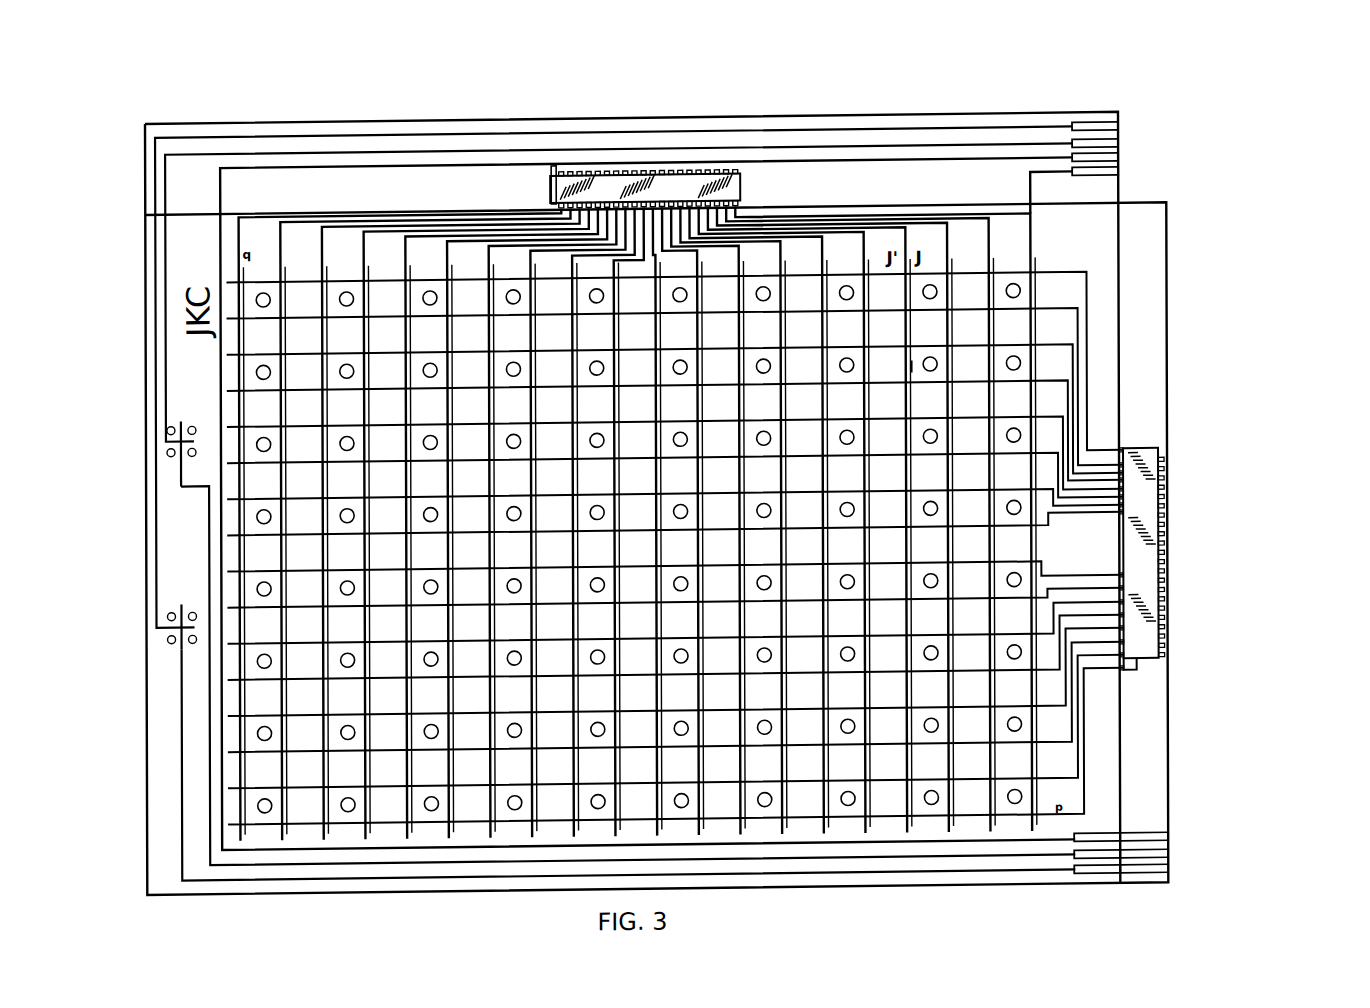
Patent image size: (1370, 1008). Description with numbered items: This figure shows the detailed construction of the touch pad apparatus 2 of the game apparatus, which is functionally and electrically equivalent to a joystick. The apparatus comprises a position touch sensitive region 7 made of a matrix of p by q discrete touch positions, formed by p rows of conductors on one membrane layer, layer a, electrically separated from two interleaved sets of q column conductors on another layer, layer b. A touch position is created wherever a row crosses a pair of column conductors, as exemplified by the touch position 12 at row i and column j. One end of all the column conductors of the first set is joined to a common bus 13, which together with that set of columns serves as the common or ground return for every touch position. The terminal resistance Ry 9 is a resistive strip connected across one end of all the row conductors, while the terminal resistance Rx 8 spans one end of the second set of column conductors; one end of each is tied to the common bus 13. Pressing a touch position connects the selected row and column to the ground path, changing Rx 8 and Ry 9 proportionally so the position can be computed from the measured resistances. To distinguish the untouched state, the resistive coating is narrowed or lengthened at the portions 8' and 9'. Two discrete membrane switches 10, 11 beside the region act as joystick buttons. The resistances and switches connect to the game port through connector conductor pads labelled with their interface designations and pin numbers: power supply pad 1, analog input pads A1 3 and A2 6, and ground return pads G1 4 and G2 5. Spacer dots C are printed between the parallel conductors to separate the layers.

The touch pad apparatus 2 is at (133, 281).
The layer b is at (268, 114).
The layer a is at (1179, 384).
The position touch sensitive region 7 is at (228, 544).
The +5 power supply connector pad 1 is at (1118, 169).
The common bus 13 is at (228, 851).
The A1 connector pad 3 is at (1118, 183).
The G1 connector pad 4 is at (1166, 870).
The G2 connector pad 5 is at (1166, 883).
The A2 connector pad 6 is at (1168, 463).
The terminal resistance Rx 8 is at (637, 460).
The narrowed or lengthened resistive coating portion 8' is at (579, 137).
The terminal resistance Ry 9 is at (1173, 557).
The lengthened or narrowed resistive coating portion 9' is at (1210, 641).
The discrete membrane switch 10 is at (166, 447).
The discrete membrane switch 11 is at (160, 634).
The touch position (i,j) 12 is at (904, 381).
The spacer dots C is at (255, 739).